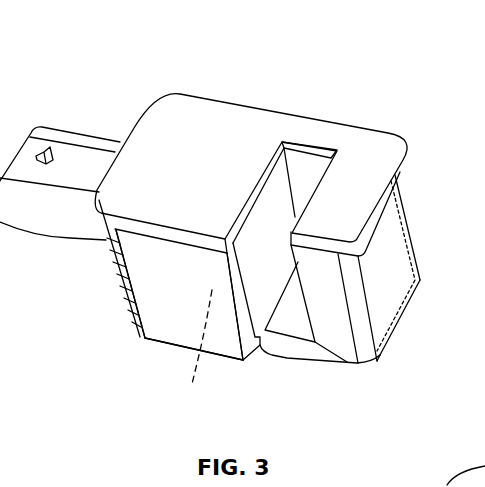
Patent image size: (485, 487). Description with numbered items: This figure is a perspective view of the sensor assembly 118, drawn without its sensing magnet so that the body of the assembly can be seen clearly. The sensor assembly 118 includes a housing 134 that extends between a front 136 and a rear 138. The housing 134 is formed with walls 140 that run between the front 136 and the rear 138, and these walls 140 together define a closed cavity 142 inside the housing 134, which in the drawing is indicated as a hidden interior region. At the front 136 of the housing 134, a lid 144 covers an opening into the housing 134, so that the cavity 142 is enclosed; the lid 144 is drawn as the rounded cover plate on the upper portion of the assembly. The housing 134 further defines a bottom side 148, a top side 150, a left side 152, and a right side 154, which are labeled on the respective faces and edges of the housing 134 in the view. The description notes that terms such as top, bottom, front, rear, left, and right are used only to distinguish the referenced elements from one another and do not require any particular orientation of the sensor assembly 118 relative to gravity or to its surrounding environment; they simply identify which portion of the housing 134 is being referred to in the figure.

The sensor assembly 118 is at (140, 50).
The housing 134 is at (393, 210).
The front 136 is at (212, 108).
The rear 138 is at (221, 360).
The walls 140 is at (173, 302).
The closed cavity 142 is at (193, 350).
The lid 144 is at (250, 132).
The bottom side 148 is at (178, 327).
The top side 150 is at (397, 190).
The left side 152 is at (122, 290).
The right side 154 is at (390, 247).